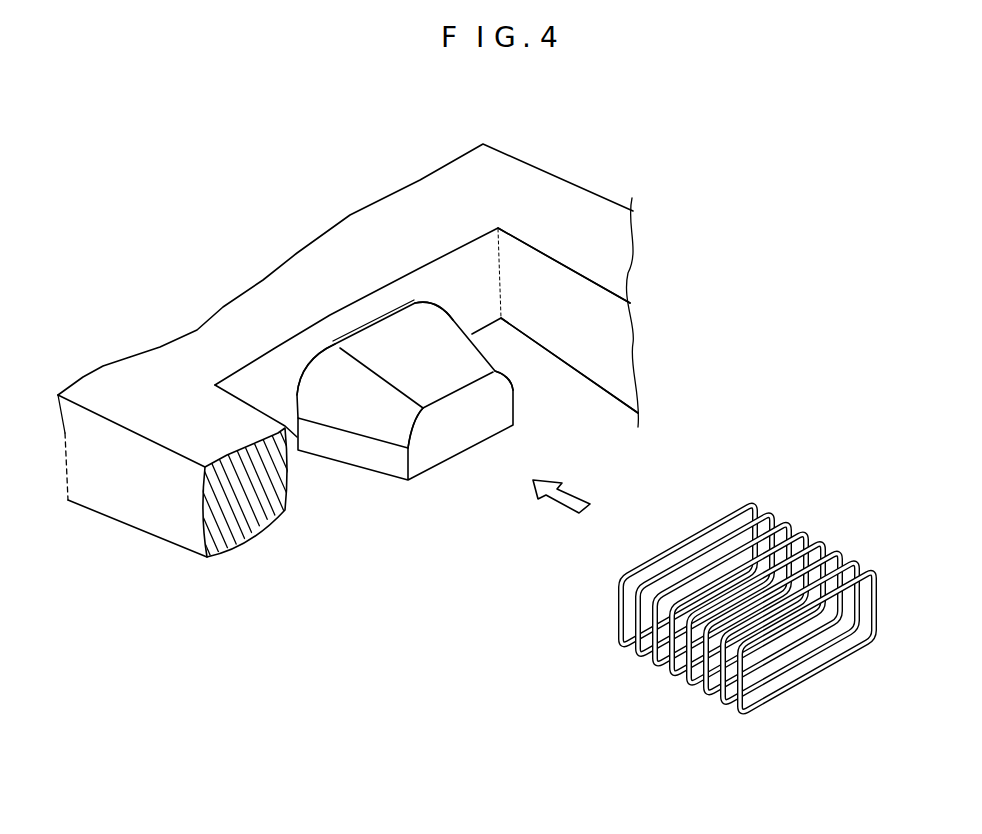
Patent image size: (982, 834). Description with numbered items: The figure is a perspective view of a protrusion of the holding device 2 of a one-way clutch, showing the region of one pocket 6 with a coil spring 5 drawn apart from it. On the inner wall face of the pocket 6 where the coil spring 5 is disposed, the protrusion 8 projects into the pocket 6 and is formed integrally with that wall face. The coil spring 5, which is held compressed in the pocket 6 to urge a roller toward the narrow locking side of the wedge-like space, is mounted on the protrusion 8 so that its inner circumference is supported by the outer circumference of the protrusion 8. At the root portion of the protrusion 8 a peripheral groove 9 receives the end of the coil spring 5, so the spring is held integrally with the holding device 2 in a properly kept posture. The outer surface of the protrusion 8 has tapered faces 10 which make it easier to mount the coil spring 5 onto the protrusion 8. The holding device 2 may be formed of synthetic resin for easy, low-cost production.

The holding device 2 is at (552, 172).
The coil spring 5 is at (775, 502).
The pocket 6 is at (562, 398).
The protrusion 8 is at (359, 477).
The peripheral groove 9 is at (313, 365).
The tapered faces 10 is at (455, 513).